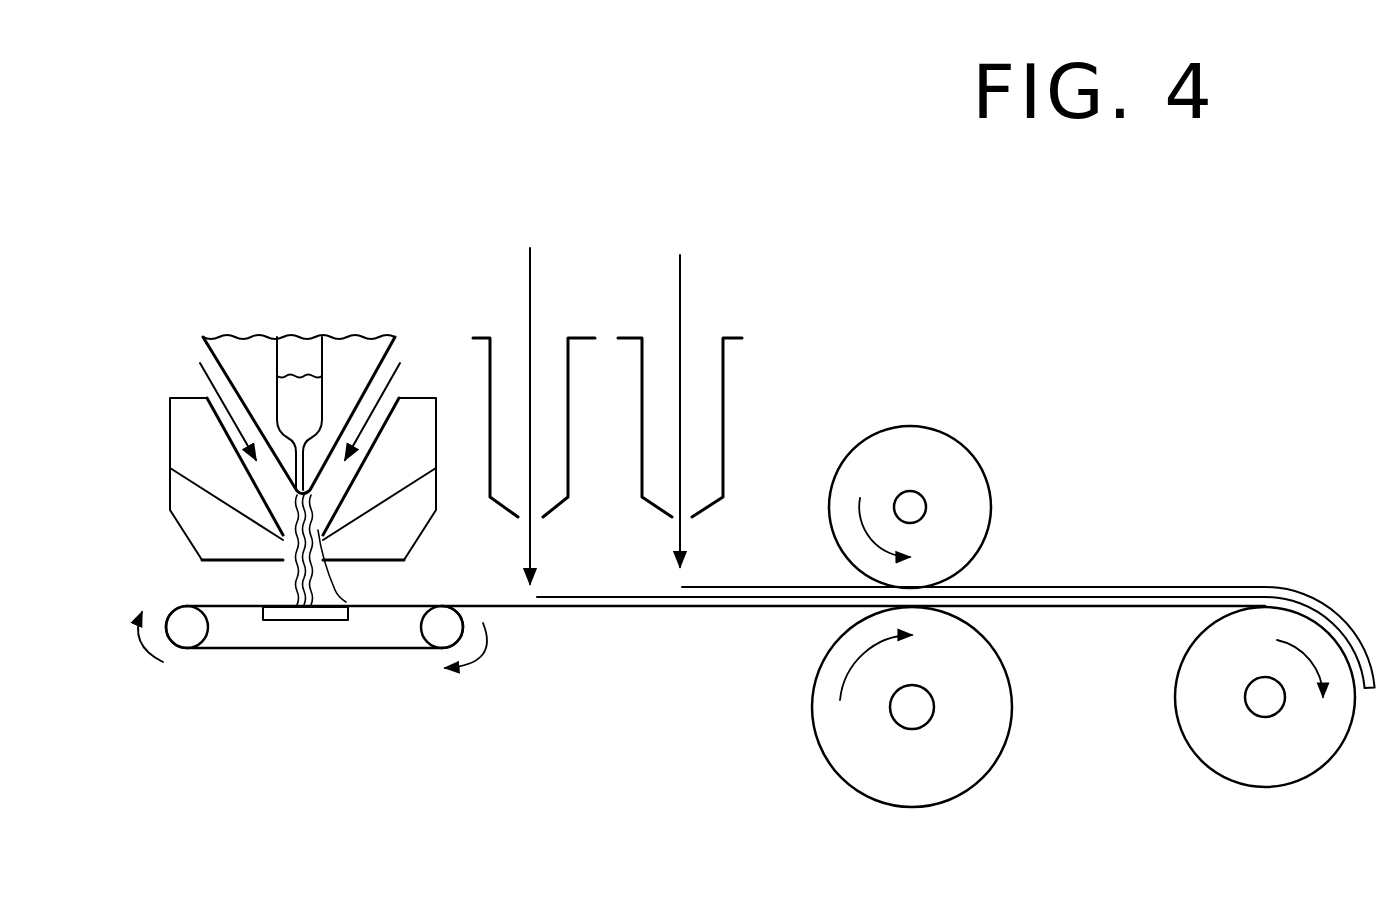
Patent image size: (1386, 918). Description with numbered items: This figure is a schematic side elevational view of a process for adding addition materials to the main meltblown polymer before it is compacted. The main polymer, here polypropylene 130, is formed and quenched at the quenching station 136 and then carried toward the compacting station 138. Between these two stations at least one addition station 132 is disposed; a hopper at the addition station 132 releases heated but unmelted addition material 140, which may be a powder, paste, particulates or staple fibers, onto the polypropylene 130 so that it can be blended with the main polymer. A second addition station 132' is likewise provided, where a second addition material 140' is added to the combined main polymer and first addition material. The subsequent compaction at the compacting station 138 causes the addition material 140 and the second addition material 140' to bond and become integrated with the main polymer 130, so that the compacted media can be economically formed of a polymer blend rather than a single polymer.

The polypropylene 130 is at (393, 607).
The addition station 132 is at (534, 518).
The second addition station 132' is at (680, 513).
The quenching station 136 is at (313, 626).
The compacting station 138 is at (968, 448).
The addition material 140 is at (871, 438).
The second addition material 140' is at (1027, 451).